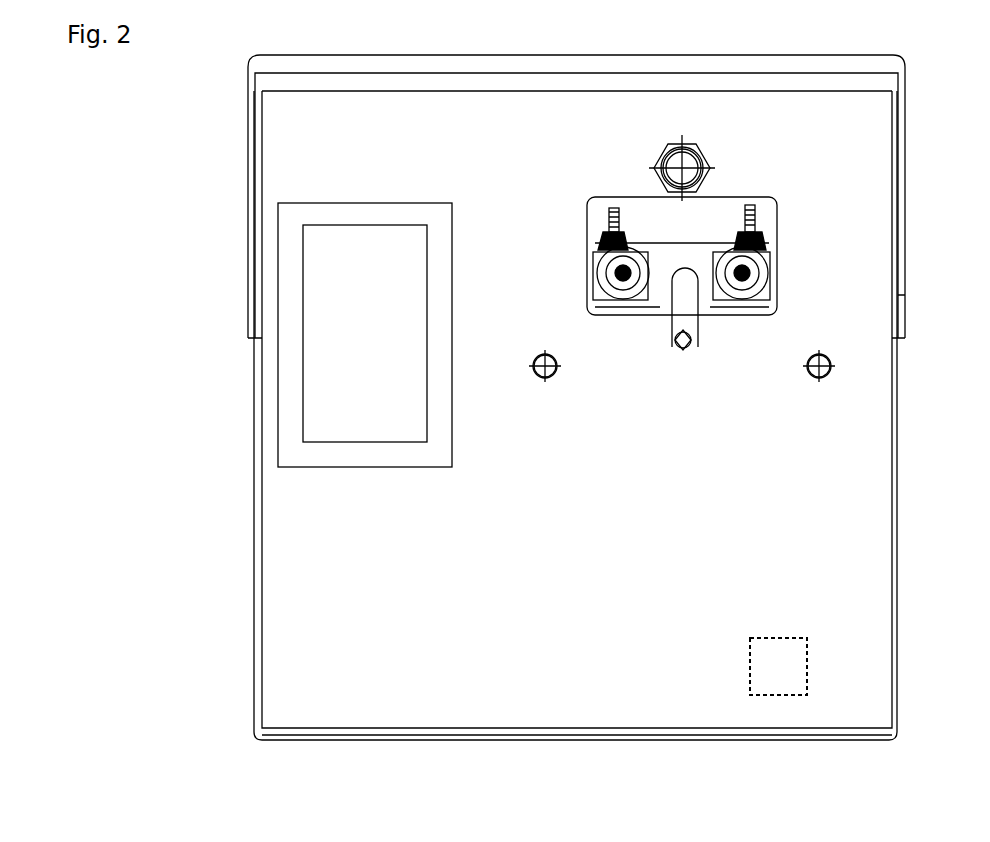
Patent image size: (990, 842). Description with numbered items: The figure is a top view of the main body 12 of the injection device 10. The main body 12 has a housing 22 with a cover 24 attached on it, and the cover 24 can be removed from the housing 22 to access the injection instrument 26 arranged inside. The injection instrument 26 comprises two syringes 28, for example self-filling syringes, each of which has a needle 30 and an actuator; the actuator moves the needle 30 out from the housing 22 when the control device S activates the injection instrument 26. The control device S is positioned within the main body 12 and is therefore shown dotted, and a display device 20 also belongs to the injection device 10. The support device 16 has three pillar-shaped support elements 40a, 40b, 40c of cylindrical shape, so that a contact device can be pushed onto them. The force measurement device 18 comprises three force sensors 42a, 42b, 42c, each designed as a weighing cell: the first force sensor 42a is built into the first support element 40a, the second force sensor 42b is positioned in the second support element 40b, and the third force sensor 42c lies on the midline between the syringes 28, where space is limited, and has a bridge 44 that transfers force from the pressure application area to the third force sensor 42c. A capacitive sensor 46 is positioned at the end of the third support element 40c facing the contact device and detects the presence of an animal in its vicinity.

The injection device 10 is at (237, 240).
The main body 12 is at (247, 608).
The support device 16 is at (630, 165).
The force measurement device 18 is at (675, 495).
The display device 20 is at (278, 393).
The housing 22 is at (308, 533).
The cover 24 is at (282, 67).
The injection instrument 26 is at (782, 235).
The syringe 28 is at (610, 253).
The needle 30 is at (622, 273).
The first support element 40a is at (548, 378).
The second support element 40b is at (823, 378).
The third support element 40c is at (675, 153).
The first force sensor 42a is at (540, 356).
The second force sensor 42b is at (813, 355).
The third force sensor 42c is at (681, 348).
The bridge 44 is at (687, 316).
The capacitive sensor 46 is at (698, 153).
The control device S is at (775, 697).